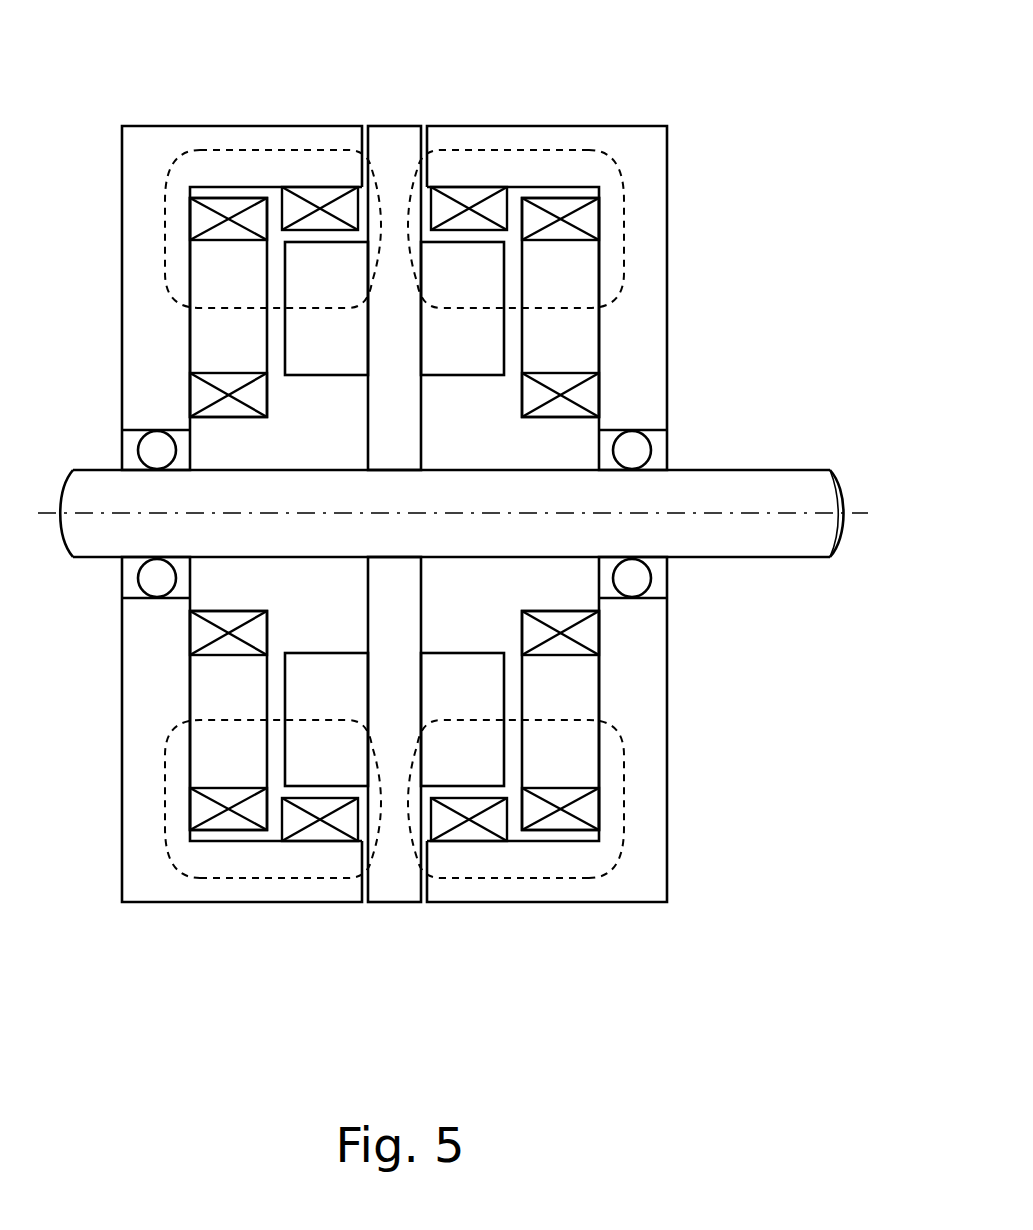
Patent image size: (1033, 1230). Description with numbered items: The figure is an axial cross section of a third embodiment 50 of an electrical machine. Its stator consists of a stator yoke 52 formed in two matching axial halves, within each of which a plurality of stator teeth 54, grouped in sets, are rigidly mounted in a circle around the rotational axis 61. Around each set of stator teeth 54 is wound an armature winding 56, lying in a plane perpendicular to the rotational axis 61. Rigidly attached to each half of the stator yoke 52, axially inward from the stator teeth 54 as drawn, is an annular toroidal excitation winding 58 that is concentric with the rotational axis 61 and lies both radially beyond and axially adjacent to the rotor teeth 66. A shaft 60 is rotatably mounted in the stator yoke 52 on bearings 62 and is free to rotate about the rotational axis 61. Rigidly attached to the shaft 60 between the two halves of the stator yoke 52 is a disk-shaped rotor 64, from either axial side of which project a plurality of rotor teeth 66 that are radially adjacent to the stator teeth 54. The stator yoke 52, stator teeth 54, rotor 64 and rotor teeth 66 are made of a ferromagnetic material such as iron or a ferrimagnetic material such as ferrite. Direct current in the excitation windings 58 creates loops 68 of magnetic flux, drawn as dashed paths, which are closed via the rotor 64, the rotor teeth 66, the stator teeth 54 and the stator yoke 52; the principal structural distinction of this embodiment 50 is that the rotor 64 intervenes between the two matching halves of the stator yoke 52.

The third embodiment 50 is at (684, 78).
The stator yoke 52 is at (139, 165).
The stator teeth 54 is at (219, 353).
The armature winding 56 is at (233, 210).
The excitation winding 58 is at (322, 196).
The shaft 60 is at (539, 550).
The rotational axis 61 is at (863, 510).
The bearings 62 is at (130, 452).
The rotor 64 is at (380, 370).
The rotor teeth 66 is at (312, 353).
The loops of magnetic flux 68 is at (165, 232).